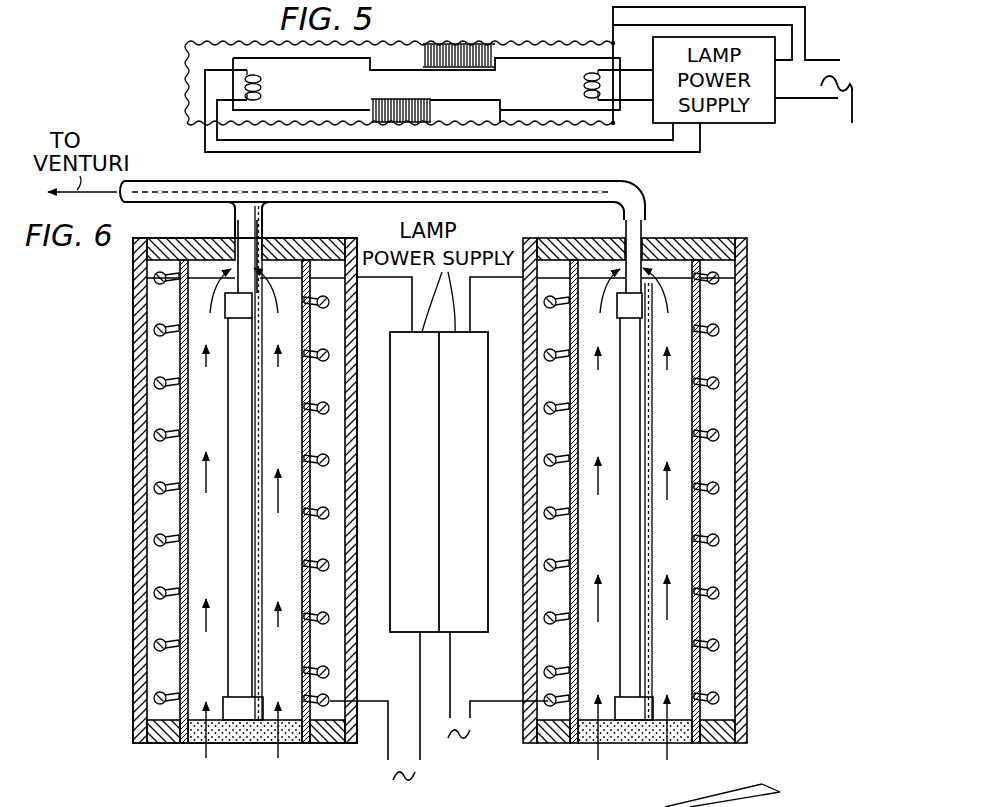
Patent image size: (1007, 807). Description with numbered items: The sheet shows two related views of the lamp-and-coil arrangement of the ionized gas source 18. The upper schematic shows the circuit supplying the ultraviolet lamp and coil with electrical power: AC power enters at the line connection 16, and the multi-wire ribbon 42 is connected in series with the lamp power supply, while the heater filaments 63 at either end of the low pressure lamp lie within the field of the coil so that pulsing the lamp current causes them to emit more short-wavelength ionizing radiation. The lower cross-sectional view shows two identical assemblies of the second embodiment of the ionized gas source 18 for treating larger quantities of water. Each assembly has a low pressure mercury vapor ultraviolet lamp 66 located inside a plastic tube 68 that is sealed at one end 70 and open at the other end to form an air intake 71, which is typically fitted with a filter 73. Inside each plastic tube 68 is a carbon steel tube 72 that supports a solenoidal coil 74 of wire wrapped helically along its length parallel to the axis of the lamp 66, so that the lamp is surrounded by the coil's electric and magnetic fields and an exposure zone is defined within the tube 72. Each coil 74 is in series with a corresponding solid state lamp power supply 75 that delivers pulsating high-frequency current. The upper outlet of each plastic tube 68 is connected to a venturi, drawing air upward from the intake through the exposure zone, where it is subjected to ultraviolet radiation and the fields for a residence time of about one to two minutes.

In FIG. 5, the line connection 16 is at (847, 119).
In FIG. 5, the multi-wire ribbon 42 is at (427, 45).
In FIG. 5, the heater filaments 63 is at (265, 88).
In FIG. 6, the ionized gas source 18 is at (98, 633).
In FIG. 6, the ultraviolet lamp 66 is at (233, 515).
In FIG. 6, the plastic tube 68 is at (133, 572).
In FIG. 6, the sealed end 70 is at (200, 230).
In FIG. 6, the air intake 71 is at (258, 766).
In FIG. 6, the carbon steel tube 72 is at (178, 411).
In FIG. 6, the filter 73 is at (228, 746).
In FIG. 6, the solenoidal coil 74 is at (147, 333).
In FIG. 6, the lamp power supply 75 is at (404, 636).